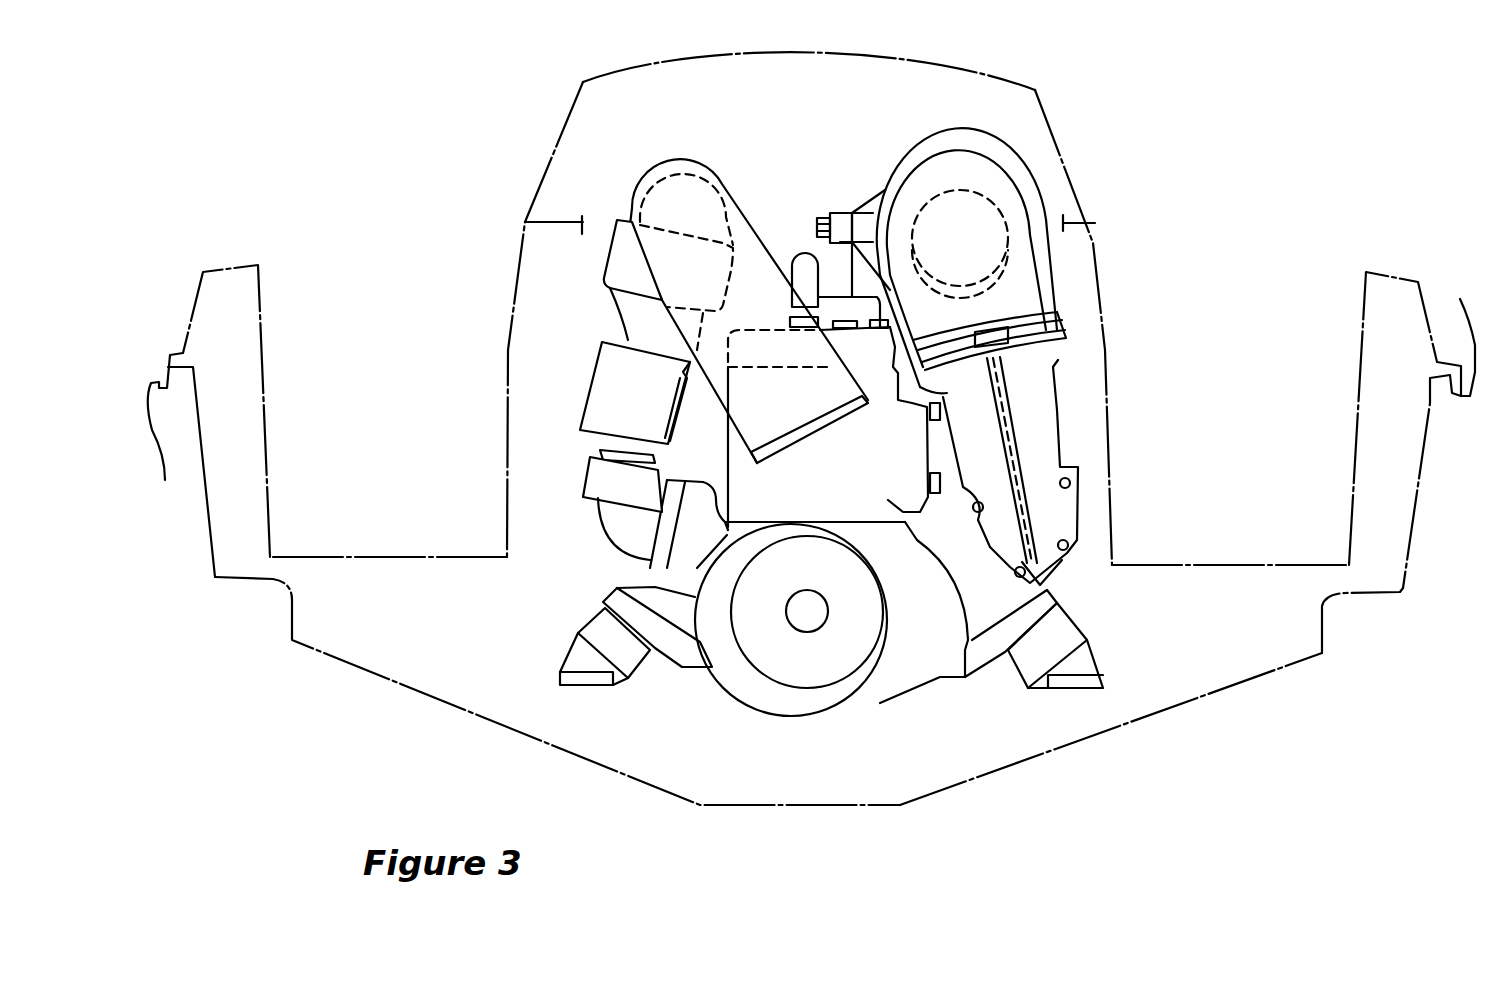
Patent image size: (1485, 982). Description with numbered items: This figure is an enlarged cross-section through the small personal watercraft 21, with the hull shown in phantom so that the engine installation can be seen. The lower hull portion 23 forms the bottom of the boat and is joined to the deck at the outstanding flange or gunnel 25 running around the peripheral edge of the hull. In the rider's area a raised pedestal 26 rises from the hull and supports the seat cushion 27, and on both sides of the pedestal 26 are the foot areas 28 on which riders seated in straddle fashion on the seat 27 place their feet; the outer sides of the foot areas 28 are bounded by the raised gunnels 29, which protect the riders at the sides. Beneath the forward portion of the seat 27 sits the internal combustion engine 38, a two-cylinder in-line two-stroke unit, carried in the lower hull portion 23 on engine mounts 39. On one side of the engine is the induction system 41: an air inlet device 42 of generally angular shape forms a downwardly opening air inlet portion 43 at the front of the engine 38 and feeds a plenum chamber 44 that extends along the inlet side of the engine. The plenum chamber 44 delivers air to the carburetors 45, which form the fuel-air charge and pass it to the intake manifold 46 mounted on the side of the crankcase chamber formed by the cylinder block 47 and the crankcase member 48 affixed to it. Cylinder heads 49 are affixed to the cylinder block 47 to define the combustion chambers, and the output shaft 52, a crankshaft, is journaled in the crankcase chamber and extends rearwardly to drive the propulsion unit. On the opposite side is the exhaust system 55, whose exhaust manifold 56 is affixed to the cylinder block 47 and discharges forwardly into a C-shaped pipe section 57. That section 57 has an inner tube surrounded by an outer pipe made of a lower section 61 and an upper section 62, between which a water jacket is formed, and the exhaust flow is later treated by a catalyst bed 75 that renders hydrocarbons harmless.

The small personal watercraft 21 is at (1190, 712).
The lower hull portion 23 is at (1262, 667).
The gunnel 25 is at (808, 415).
The raised pedestal 26 is at (512, 317).
The seat cushion 27 is at (562, 137).
The foot areas 28 is at (370, 555).
The raised gunnels 29 is at (258, 265).
The internal combustion engine 38 is at (720, 695).
The engine mounts 39 is at (567, 652).
The induction system 41 is at (581, 413).
The air inlet device 42 is at (743, 205).
The air inlet portion 43 is at (805, 435).
The plenum chamber 44 is at (605, 272).
The carburetors 45 is at (602, 368).
The intake manifold 46 is at (613, 523).
The cylinder block 47 is at (825, 522).
The crankcase member 48 is at (773, 697).
The cylinder heads 49 is at (863, 360).
The output shaft 52 is at (787, 608).
The exhaust system 55 is at (1232, 330).
The exhaust manifold 56 is at (953, 510).
The C-shaped pipe section 57 is at (1025, 270).
The lower section 61 is at (1045, 383).
The upper section 62 is at (1005, 185).
The catalyst bed 75 is at (987, 278).